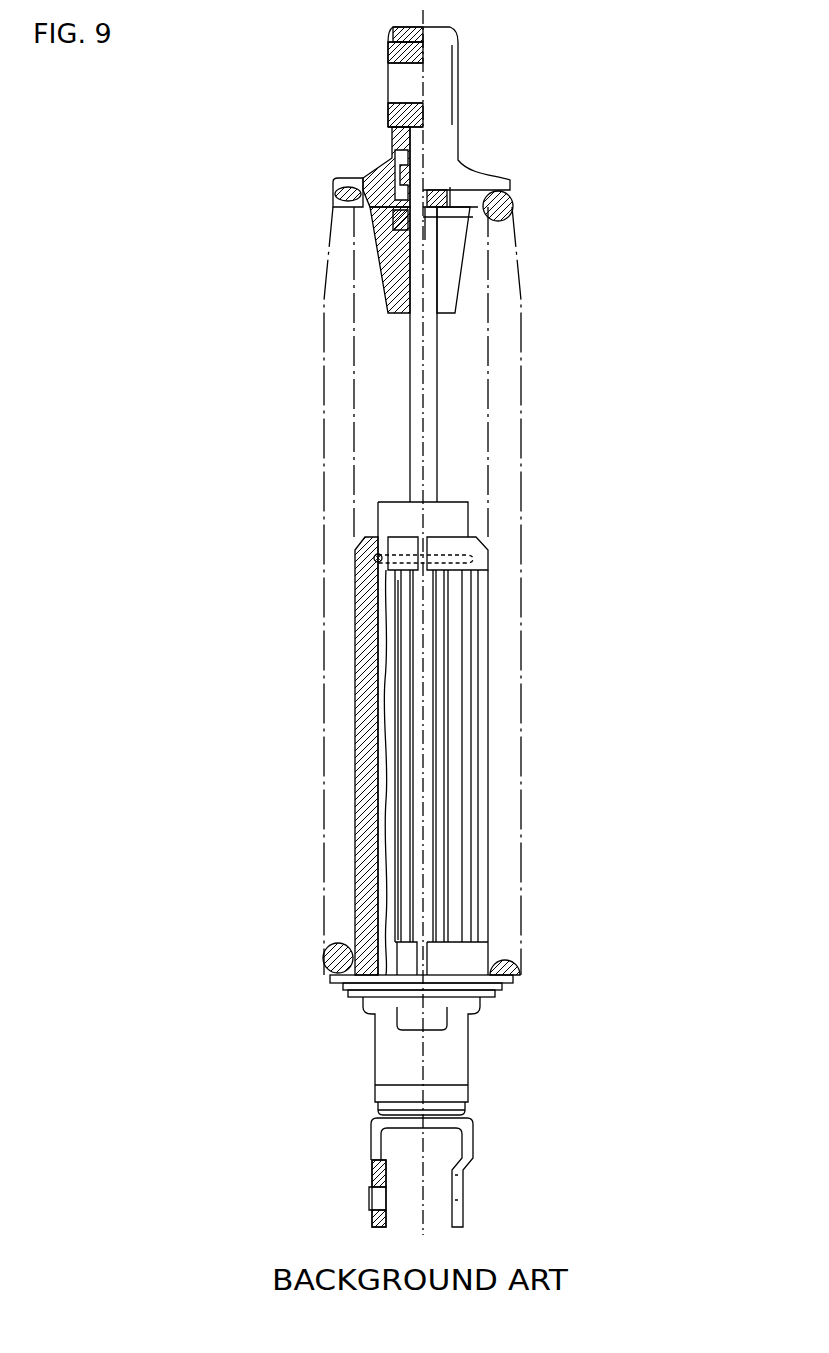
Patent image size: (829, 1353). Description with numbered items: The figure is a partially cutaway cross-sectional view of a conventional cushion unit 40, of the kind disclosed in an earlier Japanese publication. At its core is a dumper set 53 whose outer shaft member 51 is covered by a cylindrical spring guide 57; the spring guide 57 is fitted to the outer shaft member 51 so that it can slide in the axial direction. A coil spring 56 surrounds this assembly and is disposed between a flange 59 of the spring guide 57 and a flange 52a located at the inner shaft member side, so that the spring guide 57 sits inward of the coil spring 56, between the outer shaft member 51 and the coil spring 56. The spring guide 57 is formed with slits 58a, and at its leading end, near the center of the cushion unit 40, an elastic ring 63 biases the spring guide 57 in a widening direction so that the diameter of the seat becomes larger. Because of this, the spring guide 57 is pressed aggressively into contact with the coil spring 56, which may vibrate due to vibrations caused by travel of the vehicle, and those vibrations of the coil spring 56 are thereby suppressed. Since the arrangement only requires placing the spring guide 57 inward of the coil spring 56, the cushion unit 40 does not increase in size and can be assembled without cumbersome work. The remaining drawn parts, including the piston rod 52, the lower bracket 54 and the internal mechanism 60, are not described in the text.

The cushion unit 40 is at (566, 147).
The outer shaft member 51 is at (437, 510).
The piston rod 52 is at (437, 412).
The flange at inner shaft member side 52a is at (377, 182).
The dumper set 53 is at (607, 405).
The mounting bracket 54 is at (463, 1195).
The coil spring 56 is at (522, 335).
The spring guide 57 is at (363, 837).
The slits 58a is at (423, 531).
The flange of the spring guide 59 is at (330, 980).
The damping force generating mechanism 60 is at (422, 868).
The elastic ring 63 is at (357, 548).